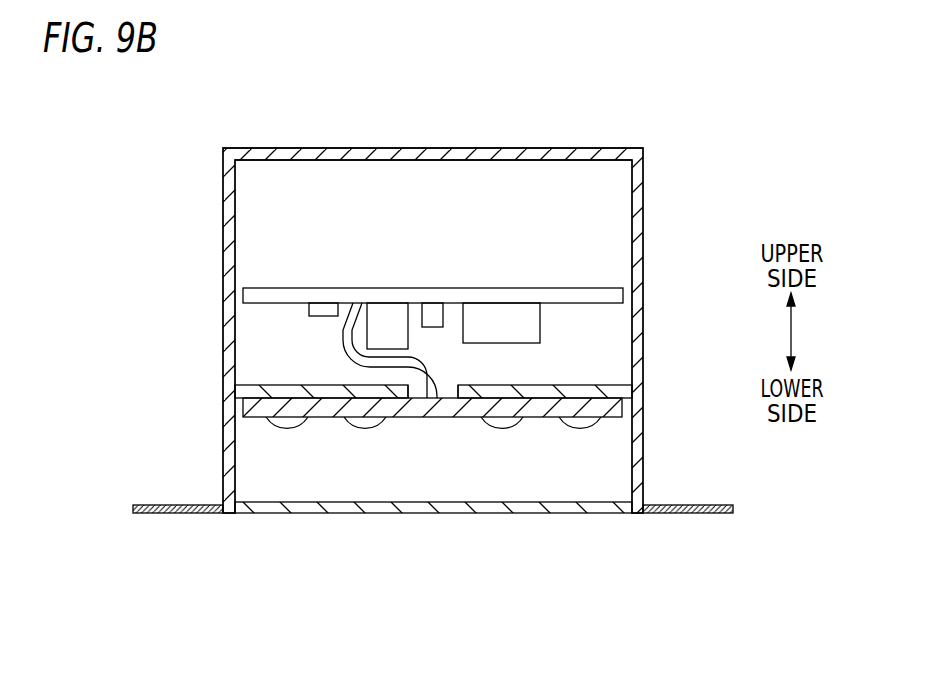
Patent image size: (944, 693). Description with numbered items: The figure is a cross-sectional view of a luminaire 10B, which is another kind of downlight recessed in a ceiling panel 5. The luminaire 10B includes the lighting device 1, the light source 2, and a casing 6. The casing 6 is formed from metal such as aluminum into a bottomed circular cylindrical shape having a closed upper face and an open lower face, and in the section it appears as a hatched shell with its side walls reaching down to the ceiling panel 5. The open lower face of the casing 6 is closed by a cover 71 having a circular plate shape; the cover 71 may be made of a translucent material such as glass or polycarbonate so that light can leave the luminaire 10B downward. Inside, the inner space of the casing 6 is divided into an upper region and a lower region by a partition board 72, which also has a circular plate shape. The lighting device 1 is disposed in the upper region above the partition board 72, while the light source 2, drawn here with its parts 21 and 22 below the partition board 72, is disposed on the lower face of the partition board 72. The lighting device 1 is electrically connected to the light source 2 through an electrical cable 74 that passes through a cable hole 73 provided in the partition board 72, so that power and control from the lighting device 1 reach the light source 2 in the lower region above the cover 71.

The luminaire 10B is at (193, 205).
The casing 6 is at (512, 149).
The lighting device 1 is at (434, 287).
The electrical cable 74 is at (340, 340).
The partition board 72 is at (573, 389).
The cable hole 73 is at (444, 397).
The light source 2 is at (432, 500).
The protrusions 21 is at (365, 425).
The plate portion 22 is at (450, 413).
The cover 71 is at (533, 507).
The ceiling panel 5 is at (703, 512).